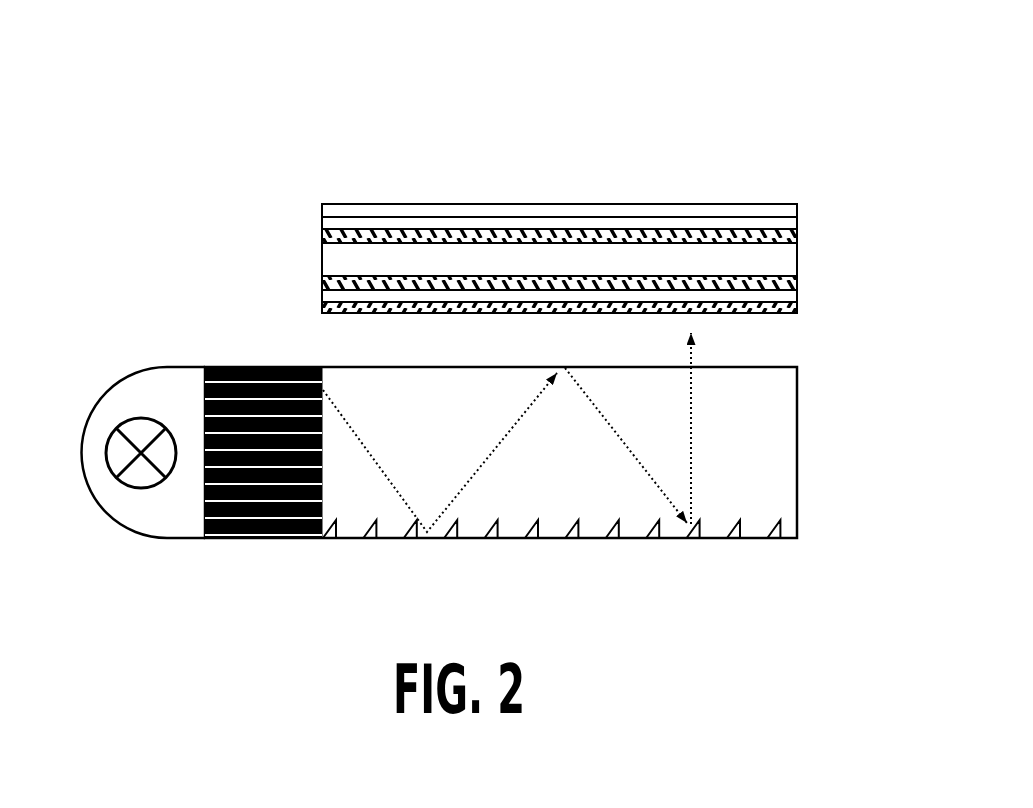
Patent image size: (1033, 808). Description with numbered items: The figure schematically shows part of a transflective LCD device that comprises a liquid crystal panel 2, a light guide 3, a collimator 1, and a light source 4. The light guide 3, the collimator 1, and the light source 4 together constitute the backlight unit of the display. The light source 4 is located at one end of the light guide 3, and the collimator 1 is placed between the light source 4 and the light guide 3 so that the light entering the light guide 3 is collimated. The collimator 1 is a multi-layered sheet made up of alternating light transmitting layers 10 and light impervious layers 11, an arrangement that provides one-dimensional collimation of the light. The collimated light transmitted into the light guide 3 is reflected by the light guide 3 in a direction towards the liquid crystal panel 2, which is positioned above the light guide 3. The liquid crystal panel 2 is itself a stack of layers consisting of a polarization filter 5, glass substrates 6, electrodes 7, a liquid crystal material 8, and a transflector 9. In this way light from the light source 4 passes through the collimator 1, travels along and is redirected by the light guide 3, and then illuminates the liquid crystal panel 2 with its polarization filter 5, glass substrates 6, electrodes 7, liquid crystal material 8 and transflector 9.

The collimator 1 is at (291, 548).
The liquid crystal panel 2 is at (563, 210).
The light guide 3 is at (808, 548).
The light source 4 is at (130, 494).
The polarization filter 5 is at (494, 211).
The glass substrates 6 is at (545, 217).
The electrodes 7 is at (600, 229).
The liquid crystal material 8 is at (321, 258).
The transflector 9 is at (797, 312).
The light transmitting layers 10 is at (273, 366).
The light impervious layers 11 is at (237, 366).